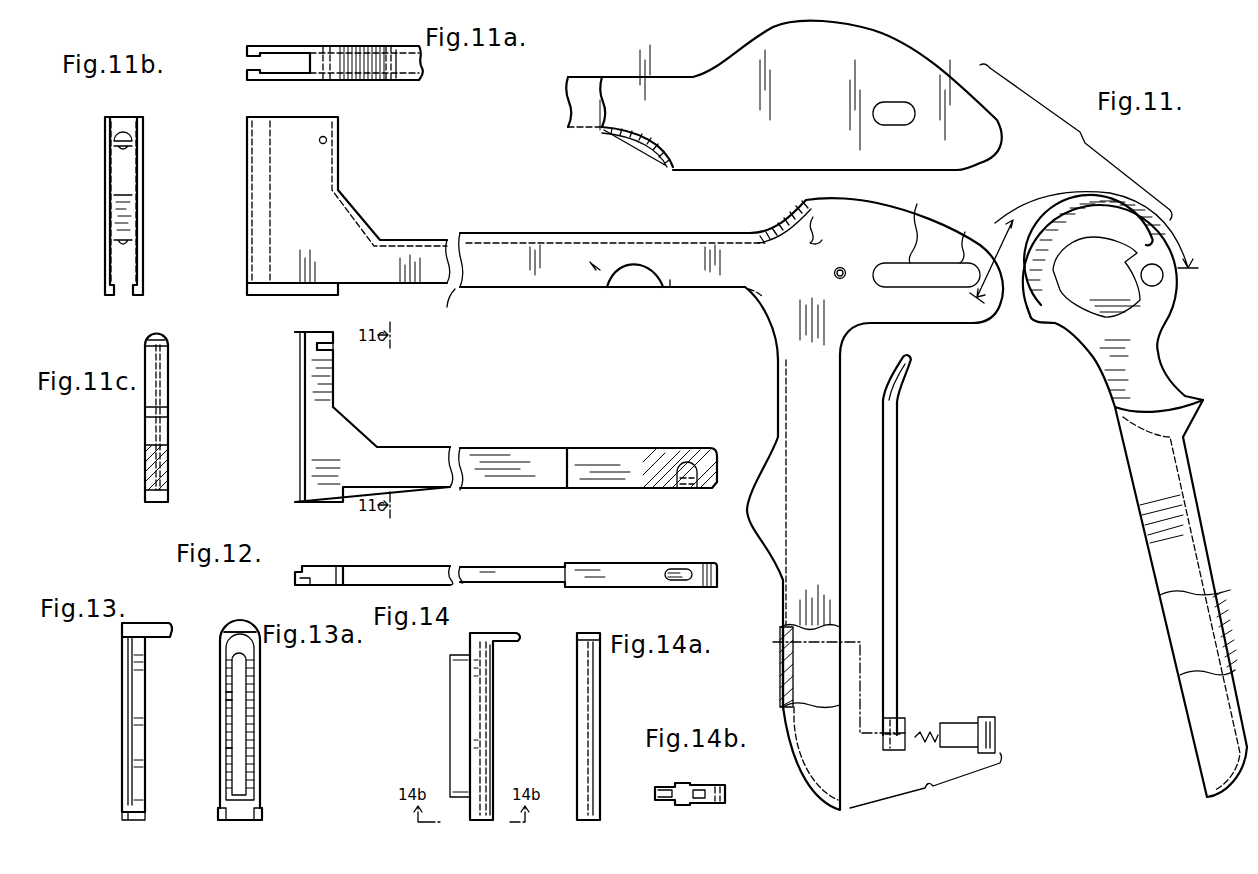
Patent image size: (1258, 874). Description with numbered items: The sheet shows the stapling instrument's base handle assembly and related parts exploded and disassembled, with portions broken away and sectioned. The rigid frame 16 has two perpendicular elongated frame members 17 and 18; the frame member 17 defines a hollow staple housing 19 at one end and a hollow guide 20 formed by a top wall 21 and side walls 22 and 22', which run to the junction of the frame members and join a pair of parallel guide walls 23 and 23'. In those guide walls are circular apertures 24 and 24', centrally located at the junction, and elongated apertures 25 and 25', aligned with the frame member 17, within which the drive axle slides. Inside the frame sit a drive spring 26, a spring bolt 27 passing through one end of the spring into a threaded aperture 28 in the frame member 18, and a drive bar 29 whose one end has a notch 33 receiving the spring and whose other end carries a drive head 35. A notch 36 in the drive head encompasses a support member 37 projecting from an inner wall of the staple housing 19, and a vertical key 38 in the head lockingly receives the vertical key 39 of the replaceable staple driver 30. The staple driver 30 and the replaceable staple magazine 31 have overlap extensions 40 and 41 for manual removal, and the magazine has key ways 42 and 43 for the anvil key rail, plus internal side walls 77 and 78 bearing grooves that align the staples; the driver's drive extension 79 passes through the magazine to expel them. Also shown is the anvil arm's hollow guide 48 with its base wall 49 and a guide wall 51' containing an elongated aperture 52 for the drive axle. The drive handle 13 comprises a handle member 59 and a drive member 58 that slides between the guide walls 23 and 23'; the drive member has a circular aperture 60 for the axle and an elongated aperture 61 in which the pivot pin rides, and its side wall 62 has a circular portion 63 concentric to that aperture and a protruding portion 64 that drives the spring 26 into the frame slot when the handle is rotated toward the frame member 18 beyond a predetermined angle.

In FIG. 11, the drive handle 13 is at (1205, 485).
In FIG. 11, the rigid frame 16 is at (748, 353).
In FIG. 11, the frame member 17 is at (600, 276).
In FIG. 11, the frame member 18 is at (849, 478).
In FIG. 11B, the hollow staple housing 19 is at (143, 190).
In FIG. 11A, the hollow staple housing 19 is at (306, 82).
In FIG. 11, the hollow staple housing 19 is at (290, 187).
In FIG. 11, the hollow guide 20 is at (444, 310).
In FIG. 11B, the top wall 21 is at (130, 250).
In FIG. 11A, the top wall 21 is at (404, 66).
In FIG. 11, the top wall 21 is at (532, 233).
In FIG. 11, the side wall 22 is at (675, 299).
In FIG. 11, the side wall 22' is at (635, 291).
In FIG. 11, the guide wall 23 is at (898, 233).
In FIG. 11, the guide wall 23' is at (826, 238).
In FIG. 11, the aperture 24 is at (848, 291).
In FIG. 11, the aperture 24' is at (840, 280).
In FIG. 11, the elongated aperture 25 is at (926, 290).
In FIG. 11, the elongated aperture 25' is at (944, 247).
In FIG. 11, the drive spring 26 is at (898, 551).
In FIG. 11, the spring bolt 27 is at (957, 722).
In FIG. 11, the threaded aperture 28 is at (781, 660).
In FIG. 11, the drive bar 29 is at (501, 447).
In FIG. 12, the drive bar 29 is at (487, 566).
In FIG. 14, the replaceable staple driver 30 is at (503, 677).
In FIG. 14A, the replaceable staple driver 30 is at (578, 690).
In FIG. 14B, the replaceable staple driver 30 is at (657, 802).
In FIG. 13, the replaceable staple magazine 31 is at (146, 700).
In FIG. 13A, the replaceable staple magazine 31 is at (262, 700).
In FIG. 11, the notch 33 is at (683, 489).
In FIG. 12, the notch 33 is at (677, 568).
In FIG. 11, the drive head 35 is at (325, 398).
In FIG. 11C, the drive head 35 is at (169, 380).
In FIG. 11, the notch 36 is at (337, 345).
In FIG. 11C, the notch 36 is at (145, 346).
In FIG. 11B, the support member 37 is at (135, 143).
In FIG. 11A, the support member 37 is at (326, 56).
In FIG. 11, the support member 37 is at (328, 140).
In FIG. 11, the vertical key 38 is at (297, 478).
In FIG. 12, the vertical key 38 is at (306, 565).
In FIG. 14, the vertical key 39 is at (493, 736).
In FIG. 14A, the vertical key 39 is at (600, 690).
In FIG. 14B, the vertical key 39 is at (700, 805).
In FIG. 14, the overlap extension 40 is at (510, 630).
In FIG. 14A, the overlap extension 40 is at (590, 630).
In FIG. 14B, the overlap extension 40 is at (718, 789).
In FIG. 13, the overlap extension 41 is at (163, 622).
In FIG. 13A, the overlap extension 41 is at (240, 622).
In FIG. 13, the key way 42 is at (123, 812).
In FIG. 13A, the key way 42 is at (220, 812).
In FIG. 13A, the key way 43 is at (262, 812).
In FIG. 11, the hollow guide 48 is at (585, 85).
In FIG. 11, the base wall 49 is at (588, 130).
In FIG. 11, the guide wall 51' is at (784, 95).
In FIG. 11, the elongated aperture 52 is at (891, 104).
In FIG. 11, the drive member 58 is at (1177, 308).
In FIG. 11, the handle member 59 is at (1225, 593).
In FIG. 11, the circular aperture 60 is at (1148, 276).
In FIG. 11, the elongated aperture 61 is at (1033, 312).
In FIG. 11, the side wall 62 is at (1050, 210).
In FIG. 11, the circular portion 63 is at (1067, 203).
In FIG. 11, the protruding portion 64 is at (991, 253).
In FIG. 13A, the internal side wall 77 is at (248, 748).
In FIG. 13A, the internal side wall 78 is at (232, 748).
In FIG. 13A, the drive extension 79 is at (224, 699).
In FIG. 14, the drive extension 79 is at (462, 713).
In FIG. 14B, the drive extension 79 is at (660, 786).